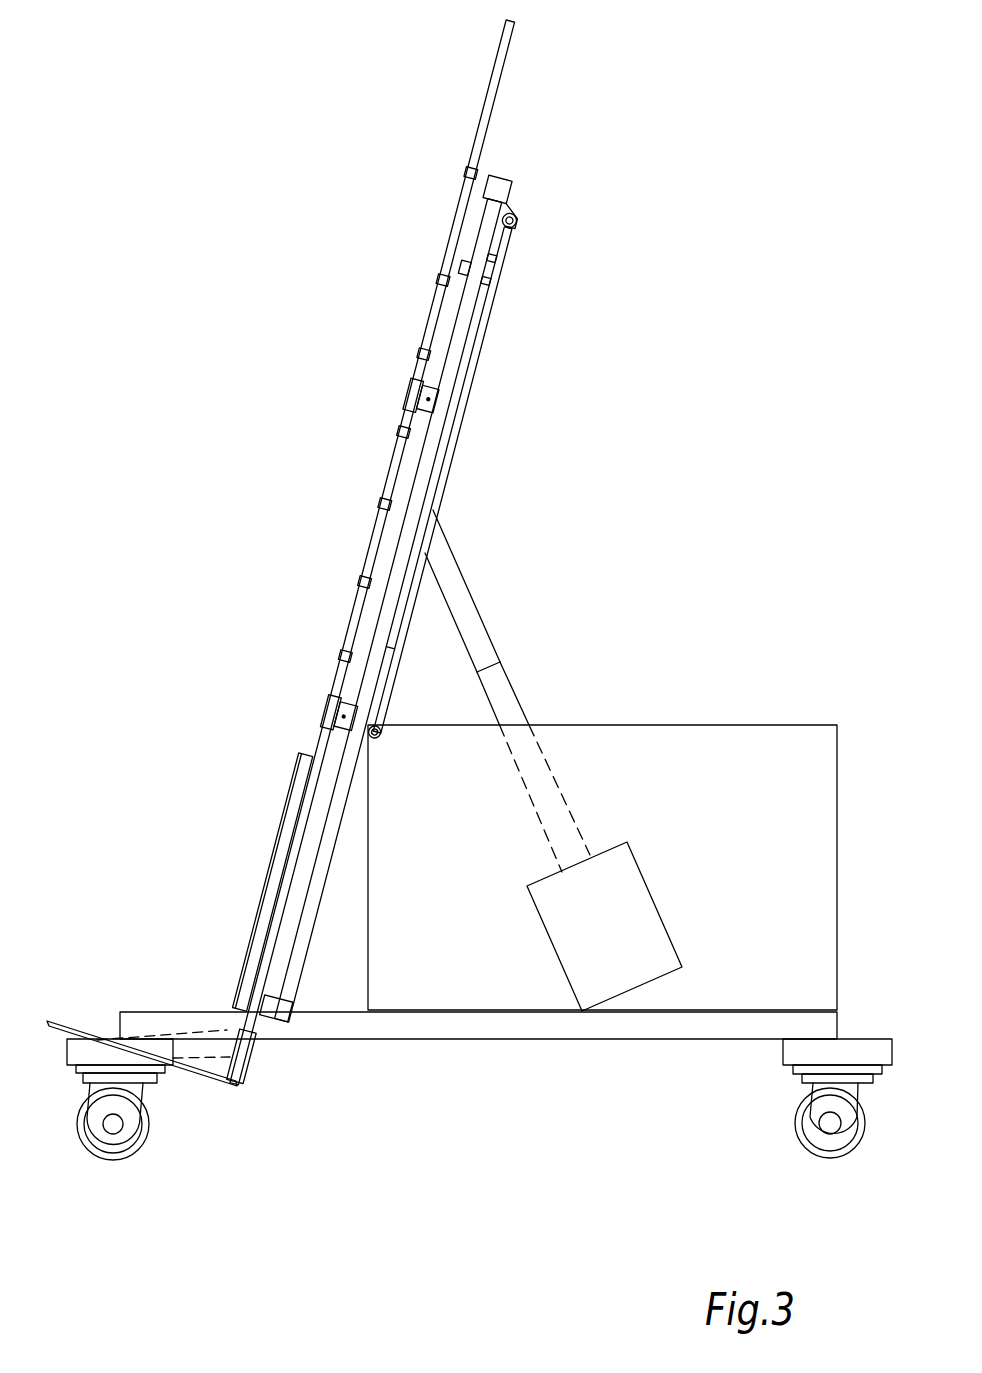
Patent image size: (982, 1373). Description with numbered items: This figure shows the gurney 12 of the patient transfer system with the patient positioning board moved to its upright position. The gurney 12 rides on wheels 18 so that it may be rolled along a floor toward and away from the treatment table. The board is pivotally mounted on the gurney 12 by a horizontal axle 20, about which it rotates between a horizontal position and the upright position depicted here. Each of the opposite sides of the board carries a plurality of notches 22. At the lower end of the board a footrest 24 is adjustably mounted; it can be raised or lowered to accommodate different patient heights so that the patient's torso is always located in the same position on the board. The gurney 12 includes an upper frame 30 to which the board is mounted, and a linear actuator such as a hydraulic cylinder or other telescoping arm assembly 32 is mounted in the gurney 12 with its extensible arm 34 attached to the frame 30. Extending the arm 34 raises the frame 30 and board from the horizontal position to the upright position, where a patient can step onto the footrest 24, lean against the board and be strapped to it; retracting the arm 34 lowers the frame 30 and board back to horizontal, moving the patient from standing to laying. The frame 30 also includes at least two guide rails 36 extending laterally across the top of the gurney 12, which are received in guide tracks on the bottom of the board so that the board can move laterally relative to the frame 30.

The gurney 12 is at (824, 785).
The wheels 18 is at (90, 1148).
The horizontal axle 20 is at (386, 717).
The notches 22 is at (440, 278).
The footrest 24 is at (60, 1020).
The upper frame 30 is at (470, 300).
The telescoping arm assembly 32 is at (508, 691).
The extensible arm 34 is at (463, 587).
The guide rails 36 is at (416, 386).